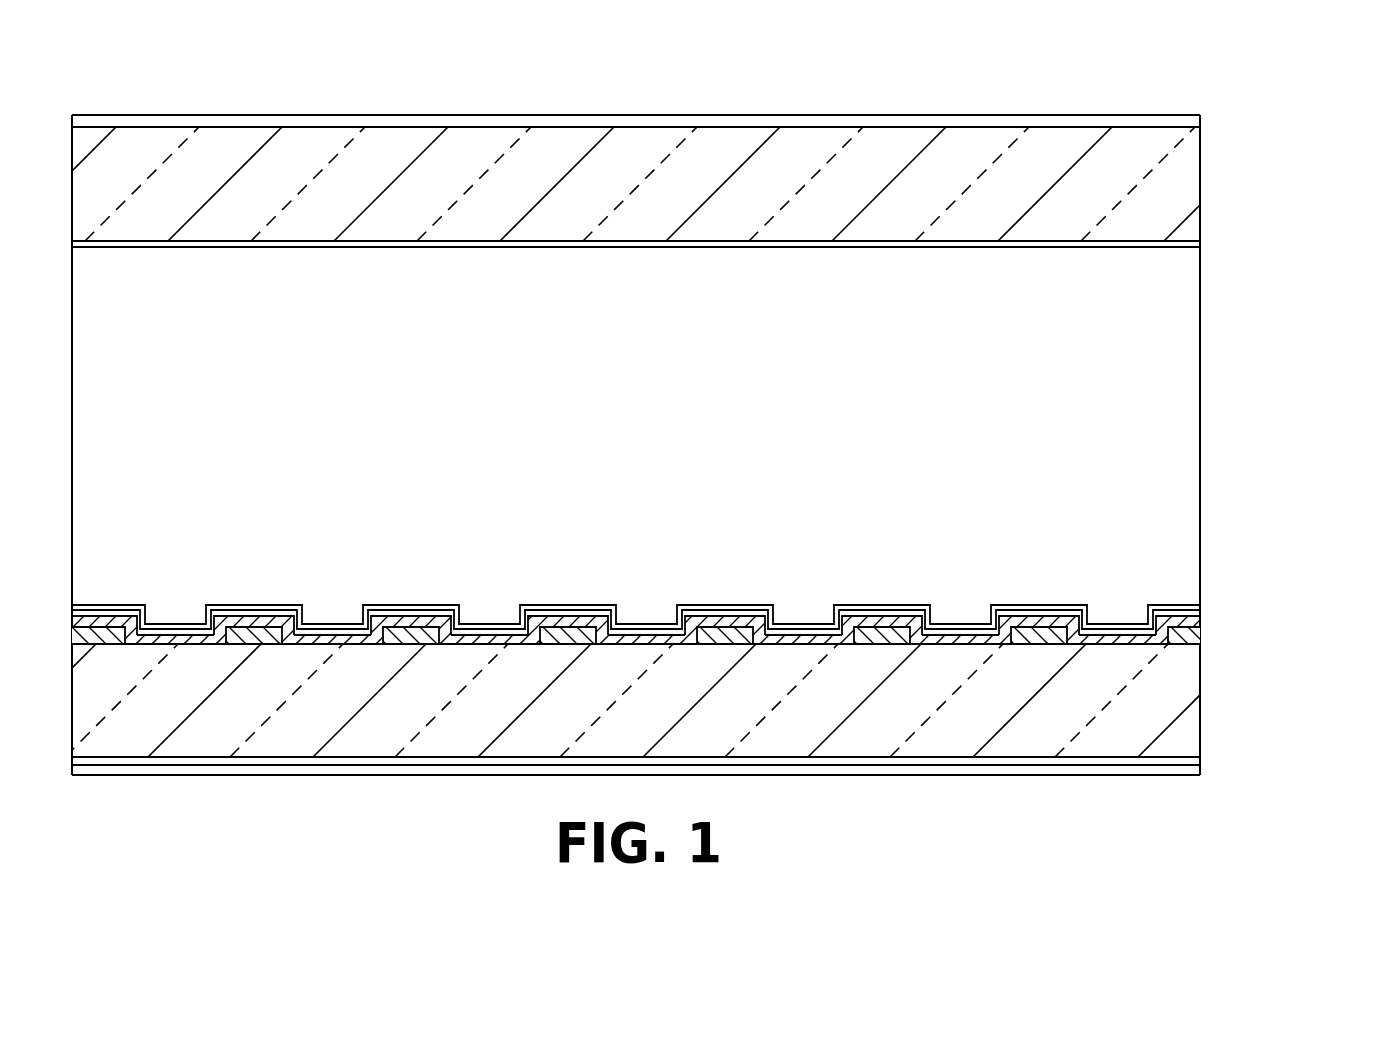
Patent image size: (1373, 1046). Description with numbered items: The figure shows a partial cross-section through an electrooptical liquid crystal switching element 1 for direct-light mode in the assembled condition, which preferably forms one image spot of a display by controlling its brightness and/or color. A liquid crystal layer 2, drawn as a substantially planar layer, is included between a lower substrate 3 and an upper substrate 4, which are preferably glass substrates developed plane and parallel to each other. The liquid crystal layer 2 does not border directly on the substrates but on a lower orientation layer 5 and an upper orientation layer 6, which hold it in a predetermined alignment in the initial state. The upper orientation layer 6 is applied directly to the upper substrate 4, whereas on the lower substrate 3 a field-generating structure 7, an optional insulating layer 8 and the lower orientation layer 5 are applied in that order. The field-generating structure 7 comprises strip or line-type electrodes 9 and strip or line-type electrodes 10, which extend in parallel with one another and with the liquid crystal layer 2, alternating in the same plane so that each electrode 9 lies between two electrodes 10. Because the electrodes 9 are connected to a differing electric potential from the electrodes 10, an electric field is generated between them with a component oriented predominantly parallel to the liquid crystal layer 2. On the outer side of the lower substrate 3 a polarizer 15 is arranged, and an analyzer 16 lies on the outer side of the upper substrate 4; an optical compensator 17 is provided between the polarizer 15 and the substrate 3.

The electrooptical liquid crystal switching element 1 is at (1262, 381).
The liquid crystal layer 2 is at (670, 442).
The lower substrate 3 is at (1165, 712).
The upper substrate 4 is at (1181, 177).
The lower orientation layer 5 is at (1079, 606).
The upper orientation layer 6 is at (1160, 246).
The field-generating structure 7 is at (673, 571).
The insulating layer 8 is at (1200, 621).
The strip or line-type electrodes 9 is at (100, 627).
The strip or line-type electrodes 10 is at (260, 627).
The polarizer 15 is at (1130, 769).
The analyzer 16 is at (1075, 118).
The optical compensator 17 is at (1196, 765).